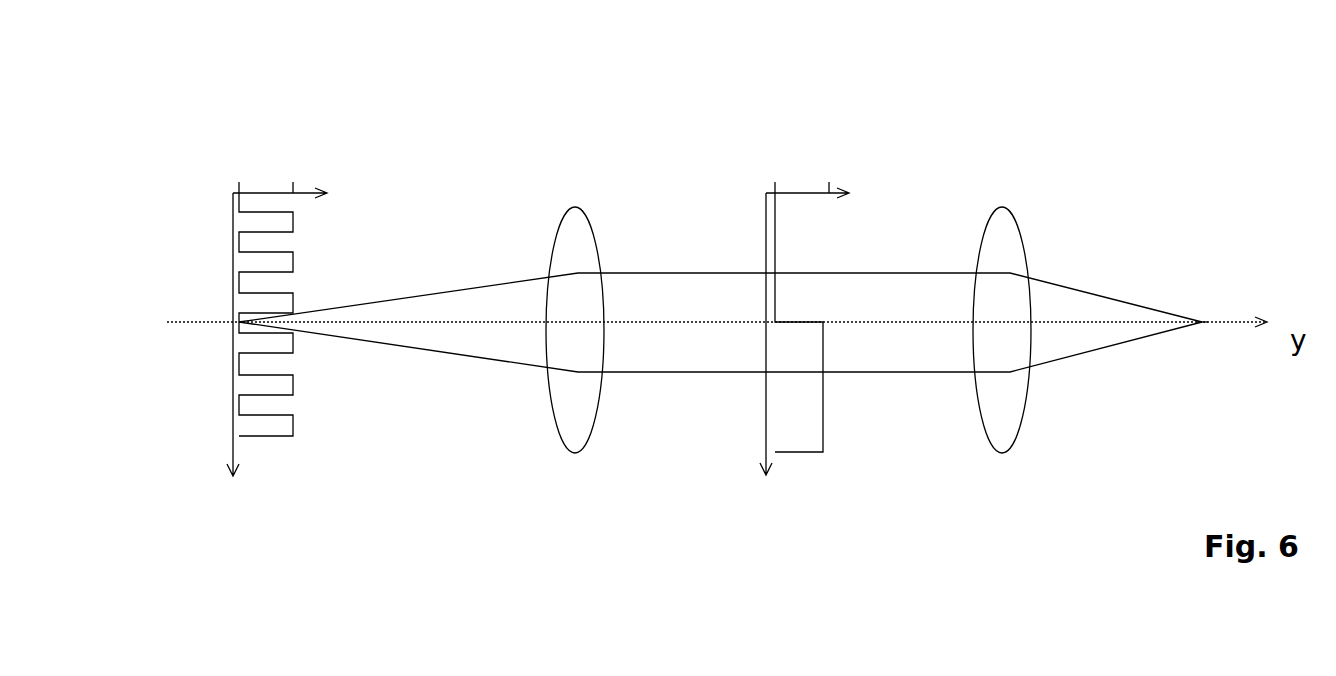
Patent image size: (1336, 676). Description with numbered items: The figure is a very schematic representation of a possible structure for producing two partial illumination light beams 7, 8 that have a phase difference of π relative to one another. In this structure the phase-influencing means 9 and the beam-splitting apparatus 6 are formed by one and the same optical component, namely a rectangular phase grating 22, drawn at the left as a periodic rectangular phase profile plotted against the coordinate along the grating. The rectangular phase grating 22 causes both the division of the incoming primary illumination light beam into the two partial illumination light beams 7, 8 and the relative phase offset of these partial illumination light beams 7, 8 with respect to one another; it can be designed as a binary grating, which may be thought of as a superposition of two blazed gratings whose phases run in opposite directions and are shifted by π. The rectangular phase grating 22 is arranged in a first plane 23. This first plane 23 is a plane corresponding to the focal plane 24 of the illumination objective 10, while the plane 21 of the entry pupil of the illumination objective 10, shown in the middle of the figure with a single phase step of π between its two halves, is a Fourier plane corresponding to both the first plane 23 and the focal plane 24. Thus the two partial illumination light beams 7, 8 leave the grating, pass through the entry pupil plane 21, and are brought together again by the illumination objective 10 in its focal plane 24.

The beam-splitting apparatus 6 is at (192, 141).
The phase-influencing means 9 is at (232, 276).
The first plane 23 is at (266, 105).
The rectangular phase grating 22 is at (208, 256).
The plane of the entry pupil 21 is at (800, 115).
The partial illumination light beam 7 is at (906, 277).
The partial illumination light beam 8 is at (893, 374).
The illumination objective 10 is at (1003, 207).
The focal plane 24 is at (1175, 197).